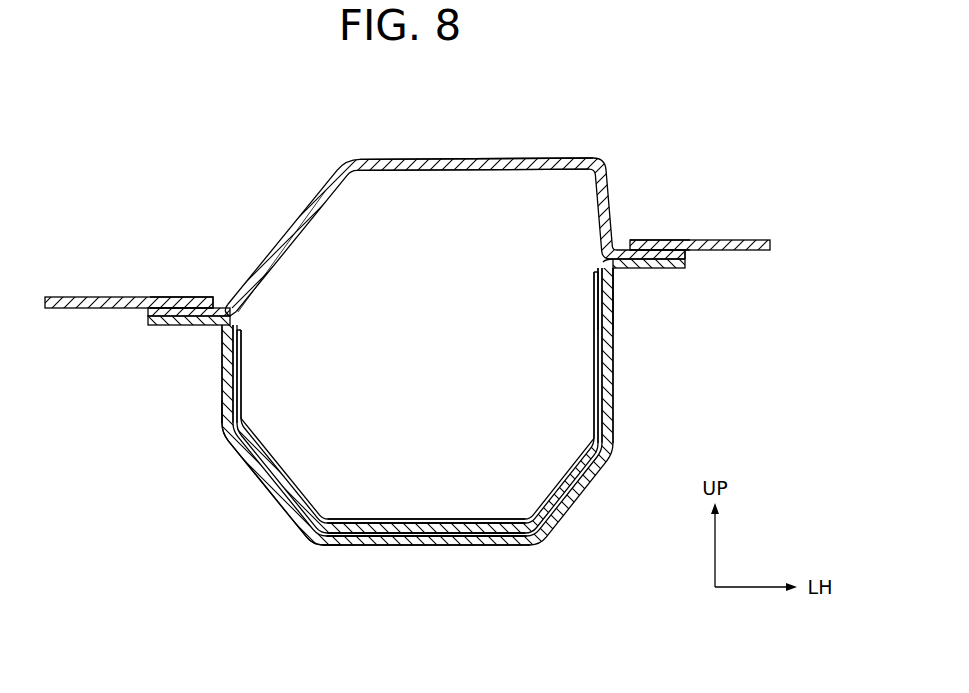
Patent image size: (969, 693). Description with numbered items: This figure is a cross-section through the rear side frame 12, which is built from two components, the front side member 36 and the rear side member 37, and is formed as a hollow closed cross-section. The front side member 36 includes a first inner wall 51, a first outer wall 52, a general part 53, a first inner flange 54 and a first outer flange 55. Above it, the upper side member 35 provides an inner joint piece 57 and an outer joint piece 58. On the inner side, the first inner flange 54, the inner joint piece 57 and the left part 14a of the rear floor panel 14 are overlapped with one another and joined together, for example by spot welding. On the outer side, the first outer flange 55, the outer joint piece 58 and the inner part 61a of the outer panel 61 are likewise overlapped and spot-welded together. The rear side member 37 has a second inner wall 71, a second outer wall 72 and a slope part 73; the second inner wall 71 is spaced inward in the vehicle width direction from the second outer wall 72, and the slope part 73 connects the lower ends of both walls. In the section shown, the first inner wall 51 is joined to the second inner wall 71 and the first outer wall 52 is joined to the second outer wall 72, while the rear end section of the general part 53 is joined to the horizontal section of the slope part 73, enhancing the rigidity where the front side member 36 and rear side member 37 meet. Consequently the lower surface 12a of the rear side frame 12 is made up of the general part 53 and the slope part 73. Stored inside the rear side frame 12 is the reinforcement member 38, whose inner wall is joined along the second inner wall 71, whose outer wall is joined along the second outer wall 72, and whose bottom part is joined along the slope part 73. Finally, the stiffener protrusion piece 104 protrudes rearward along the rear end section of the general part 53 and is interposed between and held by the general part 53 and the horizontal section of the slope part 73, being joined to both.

The rear side frame 12 is at (321, 154).
The lower surface of the rear side frame 12a is at (492, 548).
The rear floor panel 14 is at (62, 296).
The left part of the rear floor panel 14a is at (175, 297).
The upper side member 35 is at (430, 152).
The front side member 36 is at (212, 446).
The rear side member 37 is at (588, 282).
The reinforcement member 38 is at (597, 330).
The first inner wall 51 is at (222, 416).
The first outer wall 52 is at (614, 392).
The general part 53 is at (430, 536).
The first inner flange 54 is at (185, 327).
The first outer flange 55 is at (665, 270).
The inner joint piece 57 is at (192, 314).
The outer joint piece 58 is at (665, 246).
The outer panel 61 is at (757, 238).
The inner part of the outer panel 61a is at (650, 242).
The second inner wall 71 is at (243, 397).
The second outer wall 72 is at (594, 392).
The slope part 73 is at (427, 519).
The stiffener protrusion piece 104 is at (365, 547).